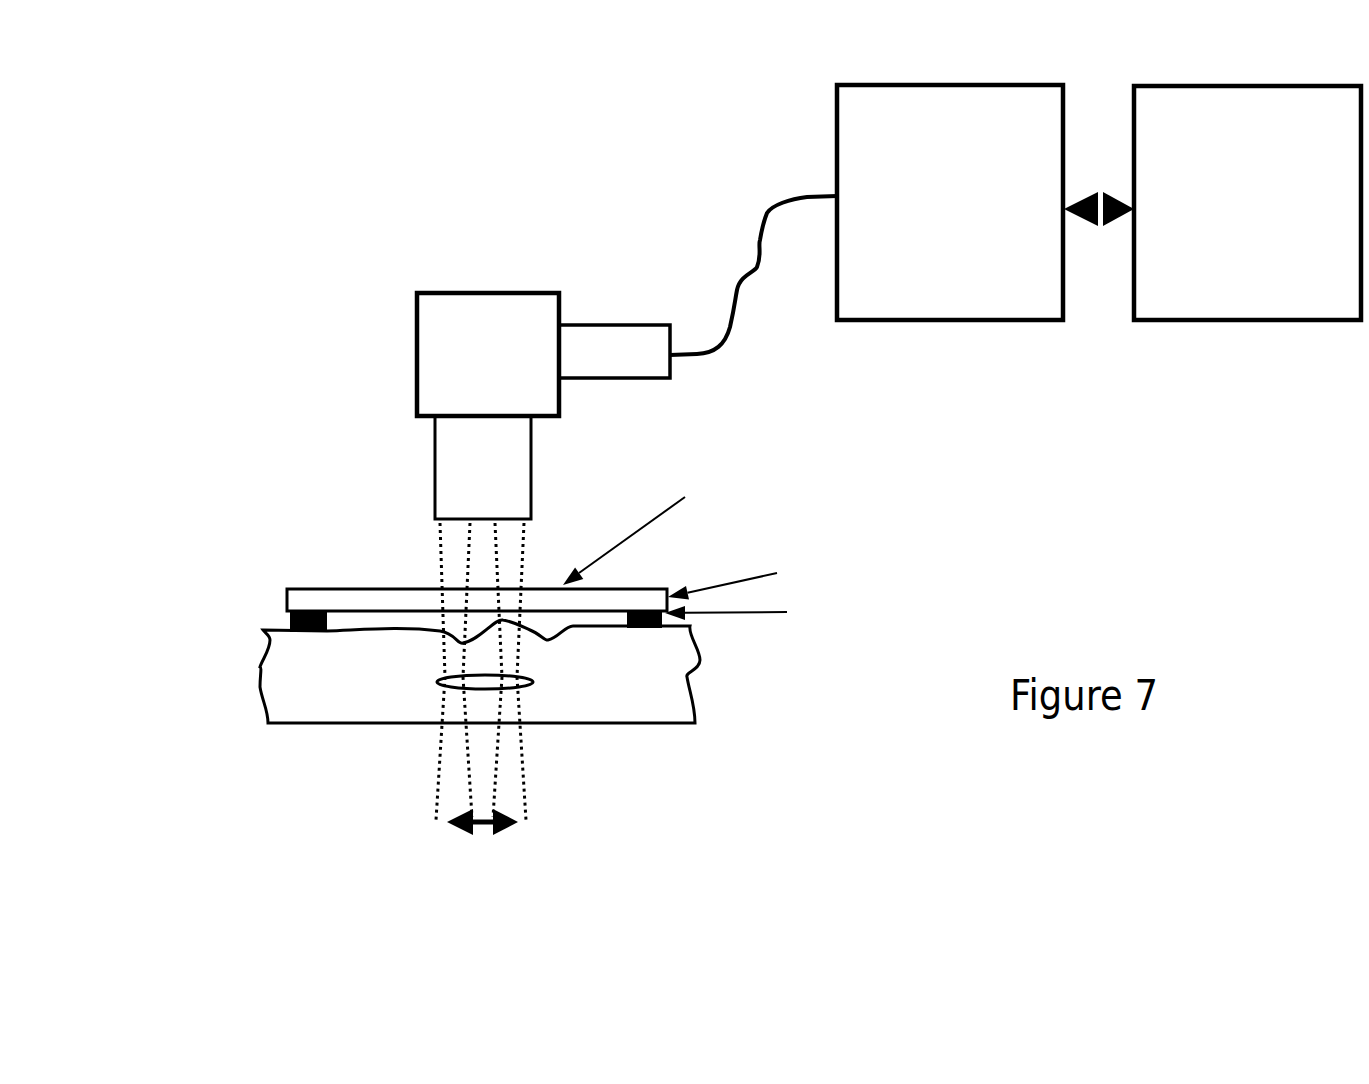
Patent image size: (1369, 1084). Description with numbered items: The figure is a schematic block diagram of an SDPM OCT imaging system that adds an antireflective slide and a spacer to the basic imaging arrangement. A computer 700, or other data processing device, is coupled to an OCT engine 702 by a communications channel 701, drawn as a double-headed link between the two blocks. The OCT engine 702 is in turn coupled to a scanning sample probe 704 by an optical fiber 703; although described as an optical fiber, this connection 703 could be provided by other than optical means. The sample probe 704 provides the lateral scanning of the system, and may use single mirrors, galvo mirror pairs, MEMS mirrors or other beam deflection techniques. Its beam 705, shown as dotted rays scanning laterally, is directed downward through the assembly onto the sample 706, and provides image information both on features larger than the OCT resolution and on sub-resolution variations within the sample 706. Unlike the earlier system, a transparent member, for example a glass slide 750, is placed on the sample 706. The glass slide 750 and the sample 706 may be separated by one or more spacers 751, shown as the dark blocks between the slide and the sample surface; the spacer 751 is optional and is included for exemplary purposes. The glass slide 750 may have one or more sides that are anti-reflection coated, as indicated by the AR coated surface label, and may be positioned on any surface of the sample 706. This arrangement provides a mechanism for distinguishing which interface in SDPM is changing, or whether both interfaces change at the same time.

The computer 700 is at (1230, 322).
The communications channel 701 is at (1097, 227).
The OCT engine 702 is at (910, 322).
The optical fiber 703 is at (763, 220).
The sample probe 704 is at (417, 348).
The beam 705 is at (437, 538).
The sample 706 is at (357, 727).
The glass slide 750 is at (633, 587).
The spacer 751 is at (688, 623).